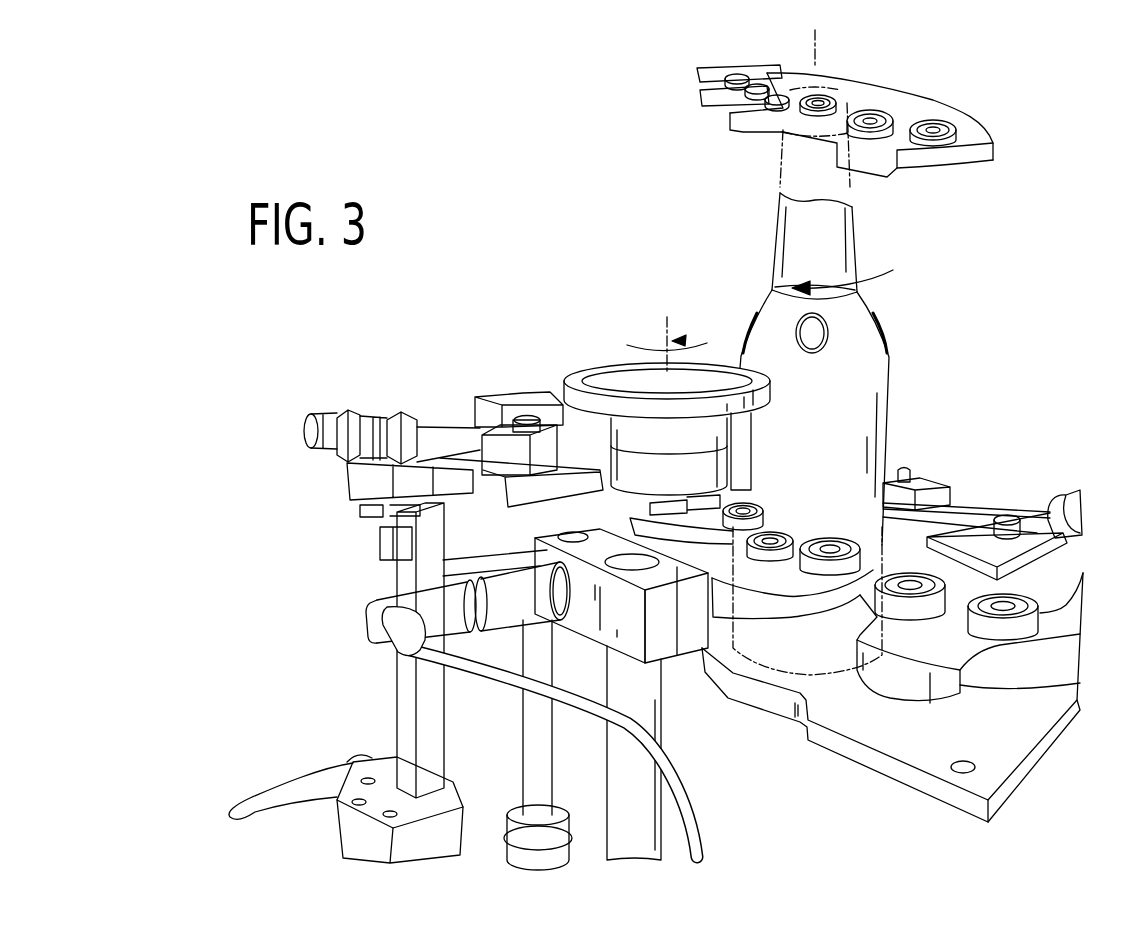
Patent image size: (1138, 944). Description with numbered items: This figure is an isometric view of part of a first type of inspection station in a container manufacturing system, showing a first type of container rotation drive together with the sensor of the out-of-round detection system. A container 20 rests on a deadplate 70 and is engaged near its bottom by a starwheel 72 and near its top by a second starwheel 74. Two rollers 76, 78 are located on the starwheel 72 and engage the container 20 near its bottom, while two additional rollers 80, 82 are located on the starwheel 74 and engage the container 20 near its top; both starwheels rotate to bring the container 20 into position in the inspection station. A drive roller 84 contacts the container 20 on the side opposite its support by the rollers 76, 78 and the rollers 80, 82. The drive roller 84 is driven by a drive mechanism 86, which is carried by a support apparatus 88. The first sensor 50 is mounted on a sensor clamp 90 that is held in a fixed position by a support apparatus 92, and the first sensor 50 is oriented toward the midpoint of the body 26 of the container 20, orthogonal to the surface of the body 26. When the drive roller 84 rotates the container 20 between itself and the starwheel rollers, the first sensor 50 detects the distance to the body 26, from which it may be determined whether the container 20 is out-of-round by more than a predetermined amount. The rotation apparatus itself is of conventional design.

The container 20 is at (893, 362).
The body 26 is at (827, 490).
The first sensor 50 is at (500, 595).
The deadplate 70 is at (877, 720).
The starwheel 72 is at (1063, 612).
The second starwheel 74 is at (980, 130).
The roller 76 is at (930, 603).
The roller 78 is at (950, 513).
The roller 80 is at (878, 117).
The roller 82 is at (827, 99).
The drive roller 84 is at (615, 408).
The drive mechanism 86 is at (633, 458).
The support apparatus 88 is at (317, 405).
The sensor clamp 90 is at (617, 620).
The support apparatus 92 is at (642, 715).